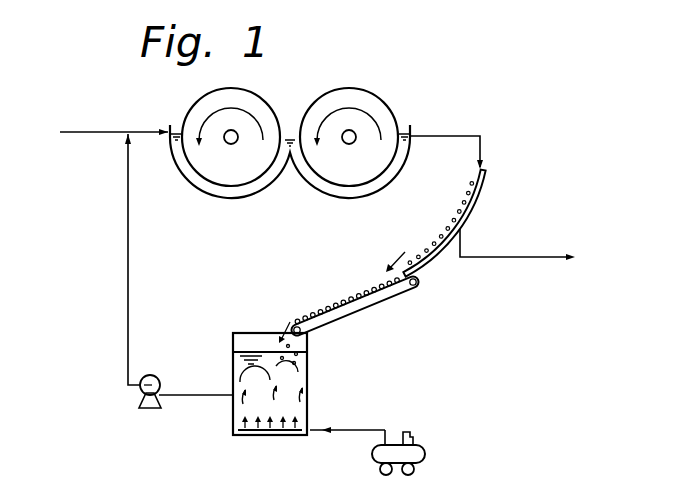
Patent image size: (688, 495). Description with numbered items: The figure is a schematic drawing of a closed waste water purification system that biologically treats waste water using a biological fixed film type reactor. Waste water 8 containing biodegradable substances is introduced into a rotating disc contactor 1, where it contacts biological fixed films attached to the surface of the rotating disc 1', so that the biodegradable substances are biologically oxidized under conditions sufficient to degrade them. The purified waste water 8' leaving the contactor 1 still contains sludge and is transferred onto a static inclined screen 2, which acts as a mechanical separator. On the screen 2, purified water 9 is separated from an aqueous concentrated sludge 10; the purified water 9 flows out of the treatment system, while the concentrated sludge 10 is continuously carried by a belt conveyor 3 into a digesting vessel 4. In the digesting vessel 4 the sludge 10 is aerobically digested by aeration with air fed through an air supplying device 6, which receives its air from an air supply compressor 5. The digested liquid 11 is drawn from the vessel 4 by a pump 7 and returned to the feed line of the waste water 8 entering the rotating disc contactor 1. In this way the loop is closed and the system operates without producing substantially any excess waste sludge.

The rotating disc contactor 1 is at (295, 163).
The rotating disc 1' is at (299, 129).
The static inclined screen 2 is at (488, 189).
The belt conveyor 3 is at (378, 306).
The digesting vessel 4 is at (307, 372).
The air supply compressor 5 is at (425, 453).
The air supplying device 6 is at (273, 431).
The pump 7 is at (152, 375).
The waste water 8 is at (103, 134).
The purified waste water 8' is at (446, 139).
The purified water 9 is at (526, 249).
The aqueous concentrated sludge 10 is at (428, 247).
The digested liquid 11 is at (129, 258).